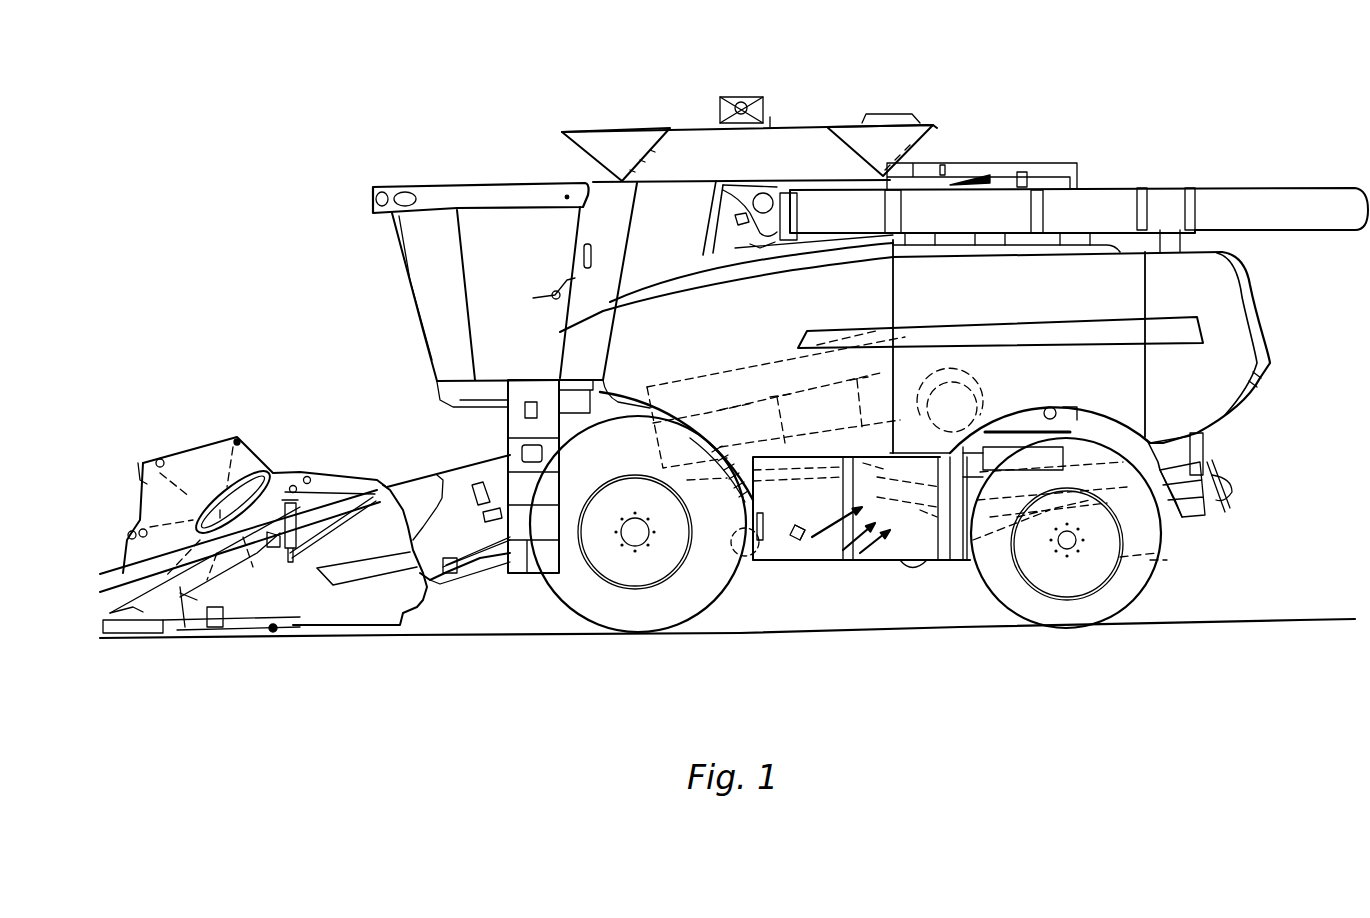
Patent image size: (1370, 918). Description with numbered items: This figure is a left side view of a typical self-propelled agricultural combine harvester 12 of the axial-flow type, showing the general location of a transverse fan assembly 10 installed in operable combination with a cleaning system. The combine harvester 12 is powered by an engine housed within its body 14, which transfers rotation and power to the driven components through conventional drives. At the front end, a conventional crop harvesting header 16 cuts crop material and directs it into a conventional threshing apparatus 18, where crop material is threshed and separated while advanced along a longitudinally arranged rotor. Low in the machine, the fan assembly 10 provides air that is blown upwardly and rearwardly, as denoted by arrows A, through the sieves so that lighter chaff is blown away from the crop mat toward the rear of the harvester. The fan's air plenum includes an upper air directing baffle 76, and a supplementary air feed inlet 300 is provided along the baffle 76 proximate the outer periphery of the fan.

The combine harvester 12 is at (1018, 136).
The body 14 is at (1205, 287).
The crop harvesting header 16 is at (148, 448).
The threshing apparatus 18 is at (698, 370).
The baffle 76 is at (822, 512).
The transverse fan assembly 10 is at (768, 572).
The supplementary air feed inlet 300 is at (805, 542).
The arrows A is at (868, 550).